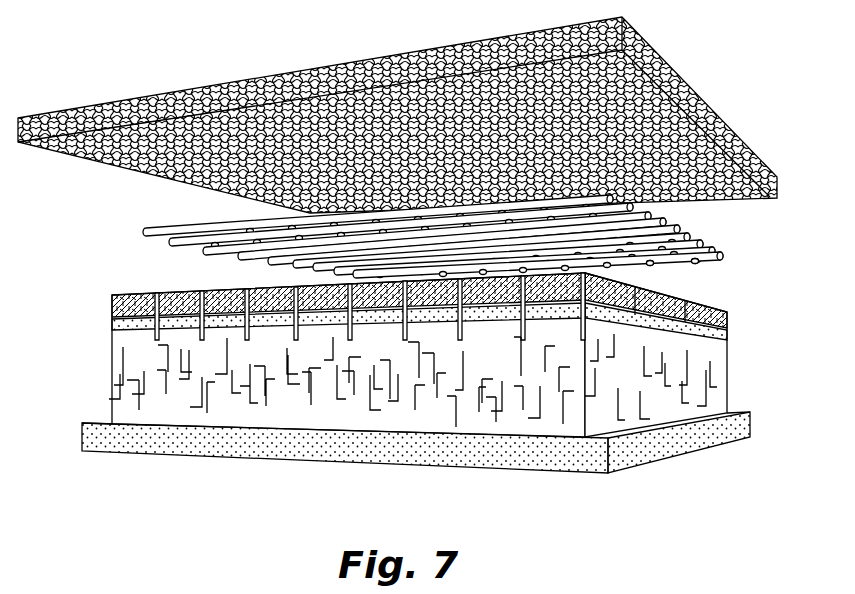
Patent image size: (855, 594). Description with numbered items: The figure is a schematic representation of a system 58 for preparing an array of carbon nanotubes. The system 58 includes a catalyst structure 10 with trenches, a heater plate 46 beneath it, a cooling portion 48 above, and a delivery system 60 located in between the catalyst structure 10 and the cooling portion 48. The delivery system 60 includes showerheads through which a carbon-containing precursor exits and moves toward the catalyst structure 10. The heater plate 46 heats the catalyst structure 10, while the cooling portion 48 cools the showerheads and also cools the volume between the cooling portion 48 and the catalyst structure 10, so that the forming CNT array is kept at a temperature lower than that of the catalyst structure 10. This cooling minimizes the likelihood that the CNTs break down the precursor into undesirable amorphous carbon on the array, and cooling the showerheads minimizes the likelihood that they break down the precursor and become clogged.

The system 58 is at (116, 74).
The cooling portion 48 is at (661, 56).
The delivery system 60 is at (710, 242).
The catalyst structure 10 is at (115, 363).
The heater plate 46 is at (82, 433).